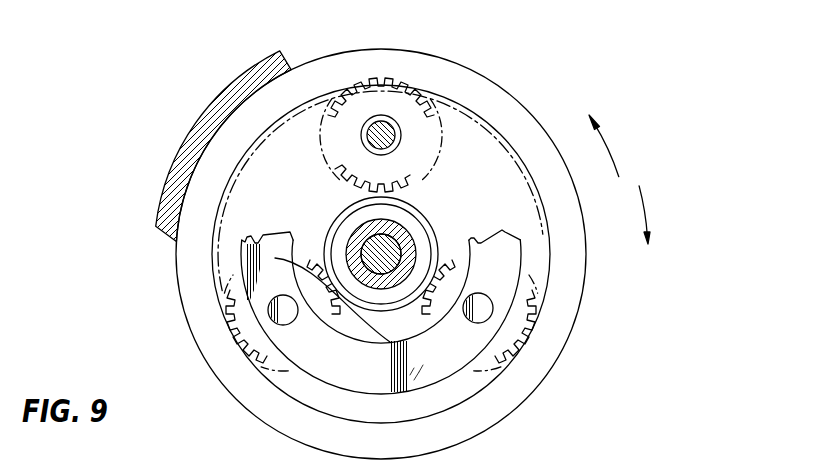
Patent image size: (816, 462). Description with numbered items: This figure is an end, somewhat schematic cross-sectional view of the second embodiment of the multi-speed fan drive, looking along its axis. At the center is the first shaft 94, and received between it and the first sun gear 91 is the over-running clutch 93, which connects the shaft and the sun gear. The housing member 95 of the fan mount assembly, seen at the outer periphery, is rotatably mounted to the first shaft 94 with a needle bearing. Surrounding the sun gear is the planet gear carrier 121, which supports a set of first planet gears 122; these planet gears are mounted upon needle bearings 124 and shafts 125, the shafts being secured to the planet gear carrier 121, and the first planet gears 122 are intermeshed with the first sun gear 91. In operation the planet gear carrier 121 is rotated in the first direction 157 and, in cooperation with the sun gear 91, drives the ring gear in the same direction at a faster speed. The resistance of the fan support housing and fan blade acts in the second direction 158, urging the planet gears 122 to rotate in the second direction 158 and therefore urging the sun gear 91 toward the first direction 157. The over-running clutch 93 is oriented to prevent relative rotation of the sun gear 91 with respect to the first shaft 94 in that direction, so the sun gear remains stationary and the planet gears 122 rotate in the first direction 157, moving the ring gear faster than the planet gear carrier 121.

The first sun gear 91 is at (347, 206).
The over-running clutch 93 is at (349, 239).
The first shaft 94 is at (400, 241).
The housing member 95 is at (189, 131).
The planet gear carrier 121 is at (243, 252).
The first planet gears 122 is at (373, 102).
The needle bearings 124 is at (390, 118).
The shafts 125 is at (400, 147).
The first direction 157 is at (645, 198).
The second direction 158 is at (610, 148).